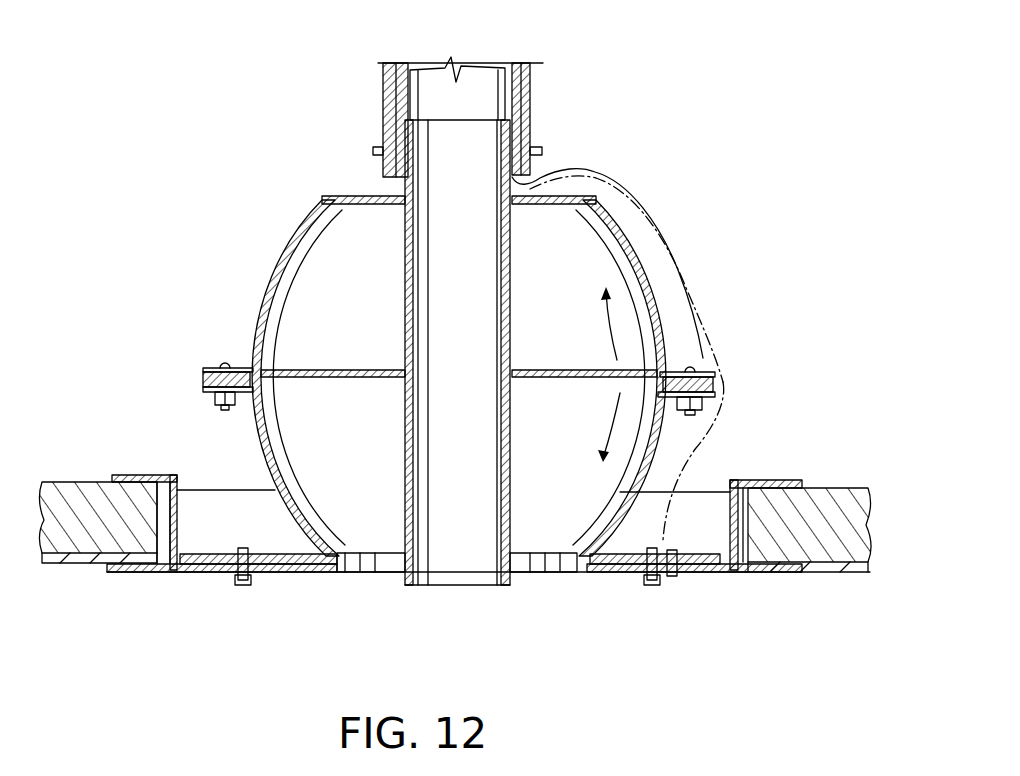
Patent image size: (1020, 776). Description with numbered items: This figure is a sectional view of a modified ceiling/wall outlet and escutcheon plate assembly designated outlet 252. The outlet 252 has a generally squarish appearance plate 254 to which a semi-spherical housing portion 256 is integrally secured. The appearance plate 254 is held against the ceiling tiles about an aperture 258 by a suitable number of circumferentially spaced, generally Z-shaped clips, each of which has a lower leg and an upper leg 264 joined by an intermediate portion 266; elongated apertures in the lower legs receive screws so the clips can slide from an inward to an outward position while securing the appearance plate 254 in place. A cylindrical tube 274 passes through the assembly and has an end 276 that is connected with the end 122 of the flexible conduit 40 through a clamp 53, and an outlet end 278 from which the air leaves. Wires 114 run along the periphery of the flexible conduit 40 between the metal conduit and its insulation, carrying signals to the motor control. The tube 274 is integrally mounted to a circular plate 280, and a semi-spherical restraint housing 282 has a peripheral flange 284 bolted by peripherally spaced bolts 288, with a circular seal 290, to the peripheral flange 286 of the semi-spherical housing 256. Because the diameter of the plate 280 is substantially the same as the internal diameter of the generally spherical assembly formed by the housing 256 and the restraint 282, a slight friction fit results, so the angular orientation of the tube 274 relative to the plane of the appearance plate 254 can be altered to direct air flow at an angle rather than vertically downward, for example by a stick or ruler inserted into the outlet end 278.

The flexible conduit 40 is at (383, 78).
The clamp 53 is at (380, 145).
The end 276 is at (473, 118).
The end 122 is at (530, 183).
The outlet 252 is at (620, 175).
The wires 114 is at (640, 212).
The cylindrical tube 274 is at (404, 272).
The circular plate 280 is at (360, 370).
The semi-spherical restraint housing 282 is at (662, 296).
The bolts 288 is at (688, 362).
The peripheral flange 284 is at (712, 371).
The circular seal 290 is at (722, 388).
The peripheral flange 286 is at (712, 414).
The semi-spherical housing portion 256 is at (655, 471).
The upper leg 264 is at (133, 474).
The intermediate portion 266 is at (177, 540).
The aperture 258 is at (138, 553).
The outlet end 278 is at (507, 587).
The appearance plate 254 is at (747, 575).